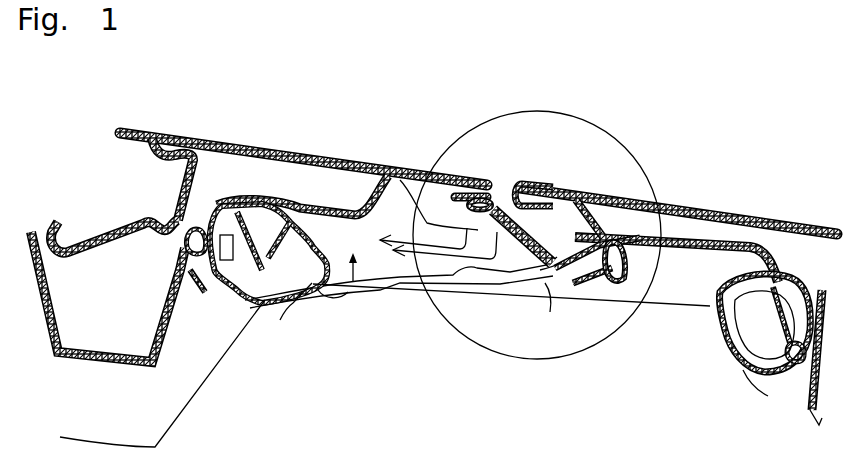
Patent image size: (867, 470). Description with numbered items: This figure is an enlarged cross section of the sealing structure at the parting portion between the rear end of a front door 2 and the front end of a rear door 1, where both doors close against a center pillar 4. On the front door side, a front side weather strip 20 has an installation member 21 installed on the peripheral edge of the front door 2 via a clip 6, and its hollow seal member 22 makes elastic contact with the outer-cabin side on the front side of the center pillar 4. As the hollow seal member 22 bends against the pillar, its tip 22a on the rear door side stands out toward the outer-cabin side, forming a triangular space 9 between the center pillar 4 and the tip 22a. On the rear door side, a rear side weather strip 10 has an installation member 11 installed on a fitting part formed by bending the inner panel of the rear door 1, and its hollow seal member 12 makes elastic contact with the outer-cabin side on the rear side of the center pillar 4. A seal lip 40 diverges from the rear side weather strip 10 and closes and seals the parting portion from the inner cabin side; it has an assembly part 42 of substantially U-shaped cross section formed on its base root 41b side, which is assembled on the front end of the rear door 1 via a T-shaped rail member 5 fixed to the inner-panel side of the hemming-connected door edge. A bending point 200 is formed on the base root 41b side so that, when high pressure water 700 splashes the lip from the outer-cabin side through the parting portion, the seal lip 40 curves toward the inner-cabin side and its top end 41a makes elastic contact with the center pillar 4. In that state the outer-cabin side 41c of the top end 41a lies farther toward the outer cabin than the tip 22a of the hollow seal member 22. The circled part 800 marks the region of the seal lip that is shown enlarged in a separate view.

The rear door 1 is at (703, 197).
The front door 2 is at (337, 158).
The center pillar 4 is at (407, 282).
The rail member 5 is at (618, 222).
The clip 6 is at (187, 243).
The triangular space 9 is at (330, 287).
The rear side weather strip 10 is at (712, 308).
The installation member 11 is at (800, 362).
The hollow seal member 12 is at (737, 335).
The front side weather strip 20 is at (230, 297).
The installation member 21 is at (200, 280).
The hollow seal member 22 is at (292, 312).
The tip 22a is at (333, 290).
The seal lip 40 is at (548, 278).
The top end 41a is at (470, 190).
The base root 41b is at (575, 275).
The outer-cabin side 41c is at (413, 200).
The assembly part 42 is at (572, 196).
The bending point 200 is at (548, 270).
The high pressure water 700 is at (509, 191).
The part 800 is at (593, 131).